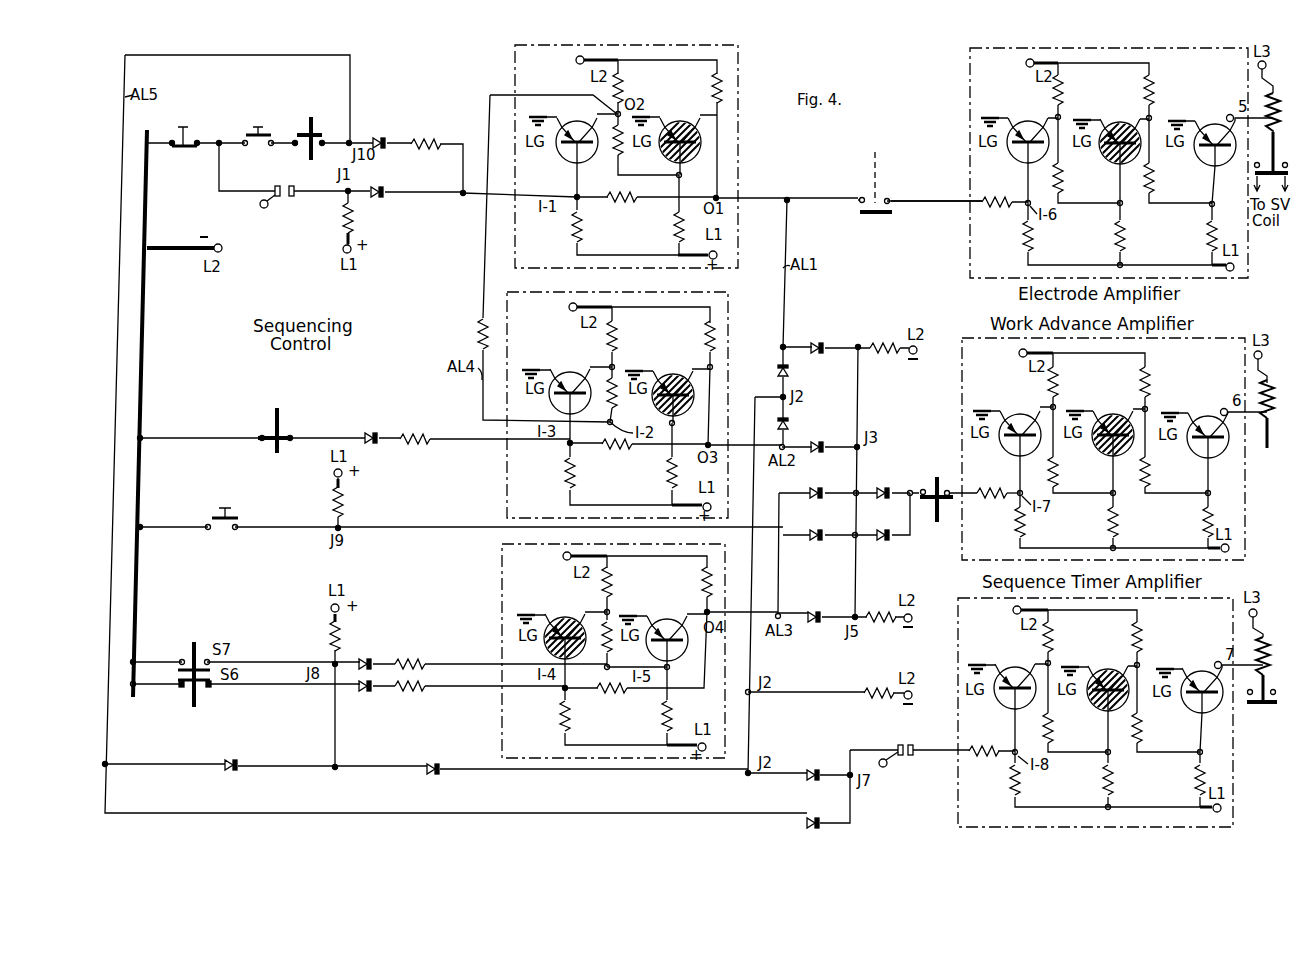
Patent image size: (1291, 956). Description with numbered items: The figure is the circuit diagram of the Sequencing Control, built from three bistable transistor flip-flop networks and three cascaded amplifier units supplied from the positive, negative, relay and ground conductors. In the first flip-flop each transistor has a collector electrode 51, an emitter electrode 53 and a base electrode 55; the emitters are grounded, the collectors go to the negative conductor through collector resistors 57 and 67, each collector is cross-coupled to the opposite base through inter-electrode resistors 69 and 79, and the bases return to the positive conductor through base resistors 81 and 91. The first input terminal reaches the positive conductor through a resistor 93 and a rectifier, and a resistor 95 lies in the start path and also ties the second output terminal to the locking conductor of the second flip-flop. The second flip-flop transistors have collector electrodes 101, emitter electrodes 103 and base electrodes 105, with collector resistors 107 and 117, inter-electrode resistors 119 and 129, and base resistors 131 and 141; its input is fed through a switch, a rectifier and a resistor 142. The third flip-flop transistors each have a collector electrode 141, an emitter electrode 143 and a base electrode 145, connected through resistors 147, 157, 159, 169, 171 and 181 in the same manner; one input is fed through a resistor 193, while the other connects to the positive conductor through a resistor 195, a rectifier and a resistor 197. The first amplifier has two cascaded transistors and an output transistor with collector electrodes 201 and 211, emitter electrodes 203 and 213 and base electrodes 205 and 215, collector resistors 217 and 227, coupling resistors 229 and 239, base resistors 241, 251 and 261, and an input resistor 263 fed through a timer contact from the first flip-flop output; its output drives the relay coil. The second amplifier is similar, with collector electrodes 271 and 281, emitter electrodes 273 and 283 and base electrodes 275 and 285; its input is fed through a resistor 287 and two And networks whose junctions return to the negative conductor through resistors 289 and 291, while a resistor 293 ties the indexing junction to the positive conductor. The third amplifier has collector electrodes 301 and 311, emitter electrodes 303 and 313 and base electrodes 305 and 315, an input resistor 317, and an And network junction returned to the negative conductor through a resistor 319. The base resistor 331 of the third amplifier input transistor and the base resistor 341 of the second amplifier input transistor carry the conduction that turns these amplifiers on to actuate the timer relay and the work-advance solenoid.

The collector electrode 51 is at (662, 105).
The emitter electrode 53 is at (630, 105).
The base electrode 55 is at (654, 179).
The collector resistor 57 is at (630, 88).
The collector resistor 67 is at (703, 88).
The inter-electrode resistor 69 is at (630, 143).
The inter-electrode resistor 79 is at (622, 207).
The base resistor 81 is at (613, 226).
The base resistor 91 is at (667, 215).
The resistor 93 is at (358, 218).
The resistor 95 is at (510, 258).
The collector electrode 101 is at (646, 358).
The emitter electrode 103 is at (610, 351).
The base electrode 105 is at (598, 421).
The collector resistor 107 is at (629, 336).
The collector resistor 117 is at (695, 336).
The inter-electrode resistor 119 is at (629, 377).
The inter-electrode resistor 129 is at (621, 454).
The base resistor 131 is at (601, 474).
The base resistor / collector electrode 141 is at (636, 515).
The resistor 142 is at (415, 428).
The emitter electrode 143 is at (598, 599).
The base electrode 145 is at (615, 667).
The collector resistor 147 is at (624, 582).
The collector resistor 157 is at (688, 582).
The inter-electrode resistor 159 is at (621, 644).
The inter-electrode resistor 169 is at (620, 699).
The base resistor 171 is at (613, 716).
The base resistor 181 is at (686, 706).
The resistor 193 is at (410, 696).
The resistor 195 is at (410, 653).
The resistor 197 is at (326, 628).
The collector electrode 201 is at (1086, 105).
The emitter electrode 203 is at (1049, 105).
The base electrode 205 is at (1058, 183).
The collector electrode 211 is at (1230, 114).
The emitter electrode 213 is at (1186, 107).
The base electrode 215 is at (1198, 185).
The collector resistor 217 is at (1075, 90).
The collector resistor 227 is at (1166, 87).
The coupling resistor 229 is at (1075, 183).
The coupling resistor 239 is at (1164, 183).
The resistor 241 is at (1117, 234).
The resistor 251 is at (1137, 234).
The resistor 261 is at (1191, 234).
The resistor 263 is at (957, 212).
The collector electrode 271 is at (1077, 395).
The emitter electrode 273 is at (1037, 395).
The base electrode 275 is at (1050, 474).
The collector electrode 281 is at (1224, 408).
The emitter electrode 283 is at (1174, 398).
The base electrode 285 is at (1191, 475).
The resistor 287 is at (994, 503).
The resistor 289 is at (883, 337).
The resistor 291 is at (880, 607).
The resistor 293 is at (355, 504).
The collector electrode 301 is at (1072, 657).
The emitter electrode 303 is at (1032, 652).
The base electrode 305 is at (1043, 730).
The collector electrode 311 is at (1218, 662).
The emitter electrode 313 is at (1172, 657).
The base electrode 315 is at (1184, 732).
The input resistor 317 is at (982, 762).
The resistor 319 is at (878, 683).
The base resistor 331 is at (1020, 790).
The base resistor 341 is at (1111, 520).